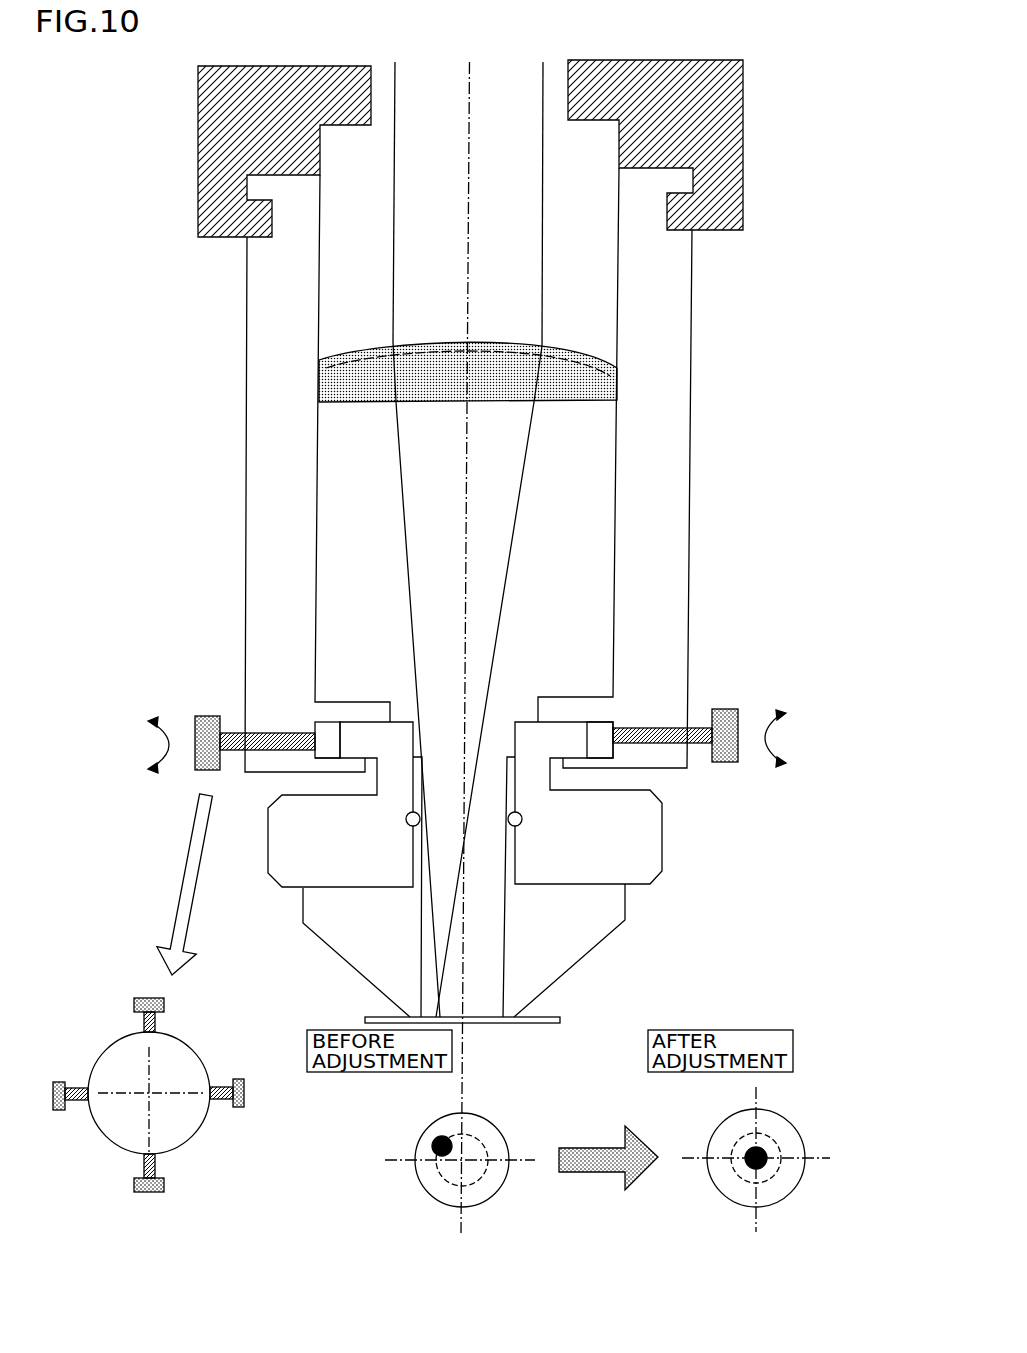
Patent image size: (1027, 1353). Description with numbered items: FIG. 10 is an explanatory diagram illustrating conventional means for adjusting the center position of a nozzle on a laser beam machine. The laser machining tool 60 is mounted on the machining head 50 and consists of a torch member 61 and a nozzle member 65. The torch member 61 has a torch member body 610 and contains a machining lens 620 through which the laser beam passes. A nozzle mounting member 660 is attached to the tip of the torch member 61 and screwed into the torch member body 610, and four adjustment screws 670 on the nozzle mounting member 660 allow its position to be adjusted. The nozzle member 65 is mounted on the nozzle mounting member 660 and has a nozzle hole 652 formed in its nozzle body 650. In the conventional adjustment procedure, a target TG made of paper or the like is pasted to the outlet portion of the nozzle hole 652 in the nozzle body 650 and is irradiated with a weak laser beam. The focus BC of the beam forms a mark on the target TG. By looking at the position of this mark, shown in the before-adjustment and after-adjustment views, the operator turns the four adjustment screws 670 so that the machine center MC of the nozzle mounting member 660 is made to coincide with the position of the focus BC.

The machining head 50 is at (742, 96).
The laser machining tool 60 is at (766, 400).
The torch member 61 is at (748, 546).
The nozzle member 65 is at (688, 935).
The torch member body 610 is at (253, 372).
The machining lens 620 is at (615, 372).
The nozzle body 650 is at (574, 942).
The nozzle hole 652 is at (500, 978).
The nozzle mounting member 660 is at (652, 853).
The adjustment screws 670 is at (725, 709).
The target TG is at (553, 1024).
The focus BC is at (432, 1138).
The machine center MC is at (467, 1155).